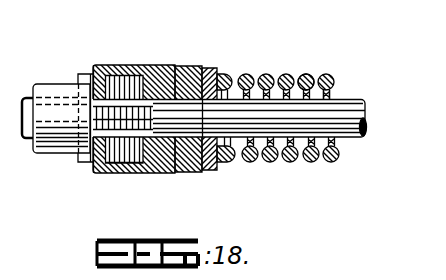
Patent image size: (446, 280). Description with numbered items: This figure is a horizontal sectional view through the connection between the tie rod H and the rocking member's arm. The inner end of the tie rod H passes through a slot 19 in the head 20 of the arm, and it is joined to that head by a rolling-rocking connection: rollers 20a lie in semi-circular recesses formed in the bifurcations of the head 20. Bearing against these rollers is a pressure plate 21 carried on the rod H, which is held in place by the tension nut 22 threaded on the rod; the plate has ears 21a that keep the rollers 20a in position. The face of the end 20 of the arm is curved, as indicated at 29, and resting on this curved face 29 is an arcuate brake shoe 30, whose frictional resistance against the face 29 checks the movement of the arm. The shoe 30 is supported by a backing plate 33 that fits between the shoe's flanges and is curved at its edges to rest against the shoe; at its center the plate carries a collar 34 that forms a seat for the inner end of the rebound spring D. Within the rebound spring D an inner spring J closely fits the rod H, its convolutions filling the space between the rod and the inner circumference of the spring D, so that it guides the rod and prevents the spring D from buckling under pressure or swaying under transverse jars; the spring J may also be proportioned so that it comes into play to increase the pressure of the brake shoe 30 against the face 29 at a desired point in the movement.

The tie rod H is at (367, 112).
The inner spring J is at (333, 90).
The rebound spring D is at (307, 78).
The slot 19 is at (182, 76).
The head 20 is at (136, 119).
The rollers 20a is at (112, 77).
The pressure plate 21 is at (92, 162).
The ears 21a is at (143, 72).
The tension nut 22 is at (61, 88).
The curved face 29 is at (195, 167).
The brake shoe 30 is at (205, 167).
The backing plate 33 is at (216, 72).
The collar 34 is at (243, 74).